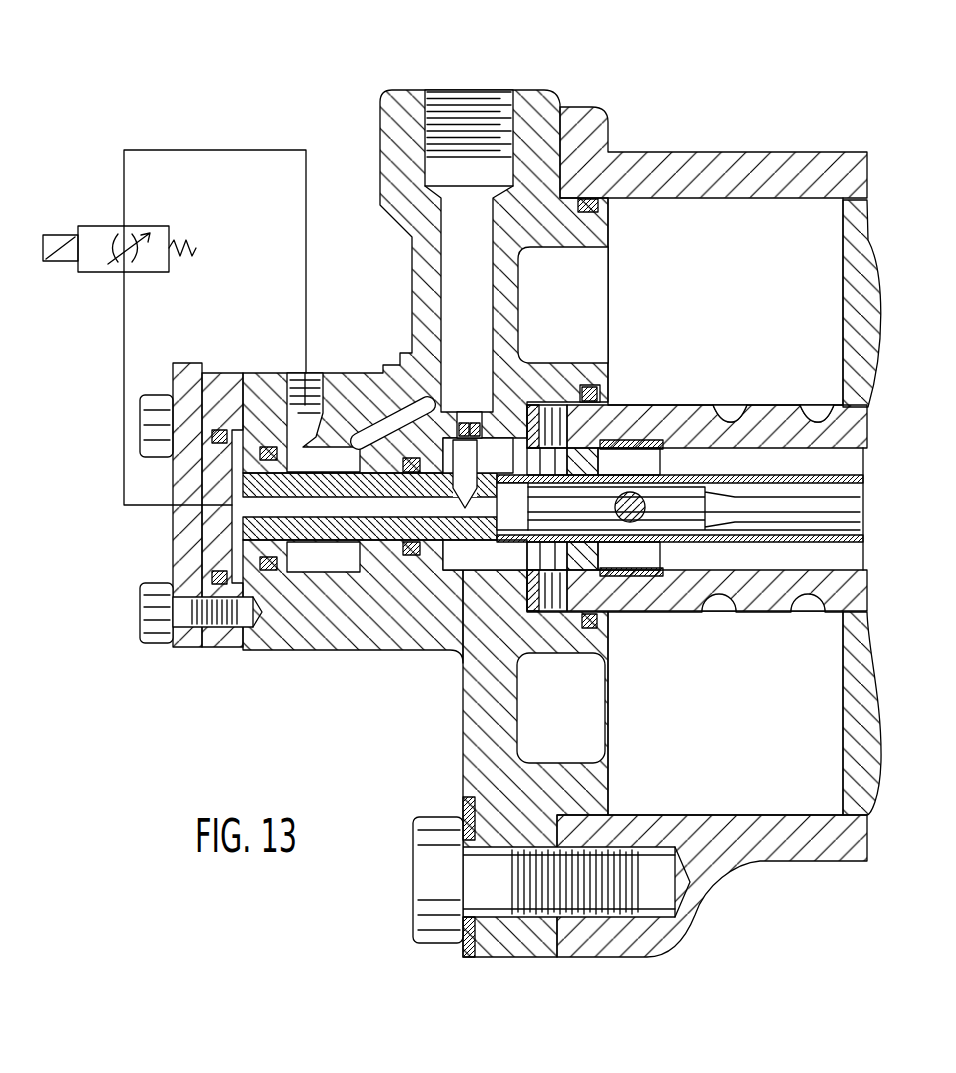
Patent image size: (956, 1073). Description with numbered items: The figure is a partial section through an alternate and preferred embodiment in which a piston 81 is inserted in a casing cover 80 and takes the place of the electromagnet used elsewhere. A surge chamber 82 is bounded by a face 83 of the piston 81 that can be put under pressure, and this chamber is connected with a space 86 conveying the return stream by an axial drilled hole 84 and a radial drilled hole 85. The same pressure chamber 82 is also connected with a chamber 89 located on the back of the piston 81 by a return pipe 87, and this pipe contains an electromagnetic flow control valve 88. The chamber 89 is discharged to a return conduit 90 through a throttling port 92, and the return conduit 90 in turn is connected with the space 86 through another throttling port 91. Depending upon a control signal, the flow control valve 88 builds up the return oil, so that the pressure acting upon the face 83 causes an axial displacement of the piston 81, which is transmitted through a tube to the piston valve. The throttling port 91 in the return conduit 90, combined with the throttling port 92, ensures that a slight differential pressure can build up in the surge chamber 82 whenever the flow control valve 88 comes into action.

The casing cover 80 is at (533, 130).
The piston 81 is at (264, 572).
The surge chamber 82 is at (235, 533).
The face of the piston 83 is at (240, 481).
The axial drilled hole 84 is at (322, 503).
The radial drilled hole 85 is at (466, 488).
The space conveying the return stream 86 is at (450, 572).
The return pipe 87 is at (127, 330).
The electromagnetic flow control valve 88 is at (112, 218).
The chamber 89 is at (312, 572).
The return conduit 90 is at (465, 288).
The throttling port 91 is at (430, 398).
The throttling port 92 is at (445, 397).